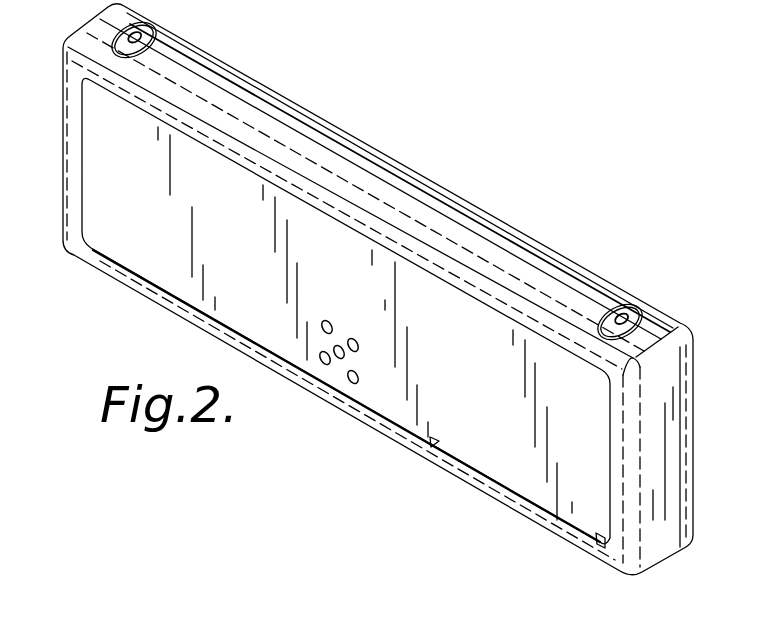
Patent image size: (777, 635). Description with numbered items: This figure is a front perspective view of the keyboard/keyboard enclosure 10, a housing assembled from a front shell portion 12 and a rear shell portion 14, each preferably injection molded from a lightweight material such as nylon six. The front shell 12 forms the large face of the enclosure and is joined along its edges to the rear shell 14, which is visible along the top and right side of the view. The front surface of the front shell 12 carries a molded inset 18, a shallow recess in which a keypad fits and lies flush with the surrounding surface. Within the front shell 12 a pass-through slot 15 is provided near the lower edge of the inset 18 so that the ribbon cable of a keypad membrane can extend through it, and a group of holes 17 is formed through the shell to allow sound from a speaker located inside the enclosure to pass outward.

The keyboard/keyboard enclosure 10 is at (435, 103).
The front shell portion 12 is at (652, 445).
The rear shell portion 14 is at (692, 370).
The pass-through slot 15 is at (483, 470).
The holes 17 is at (326, 368).
The molded inset 18 is at (105, 252).